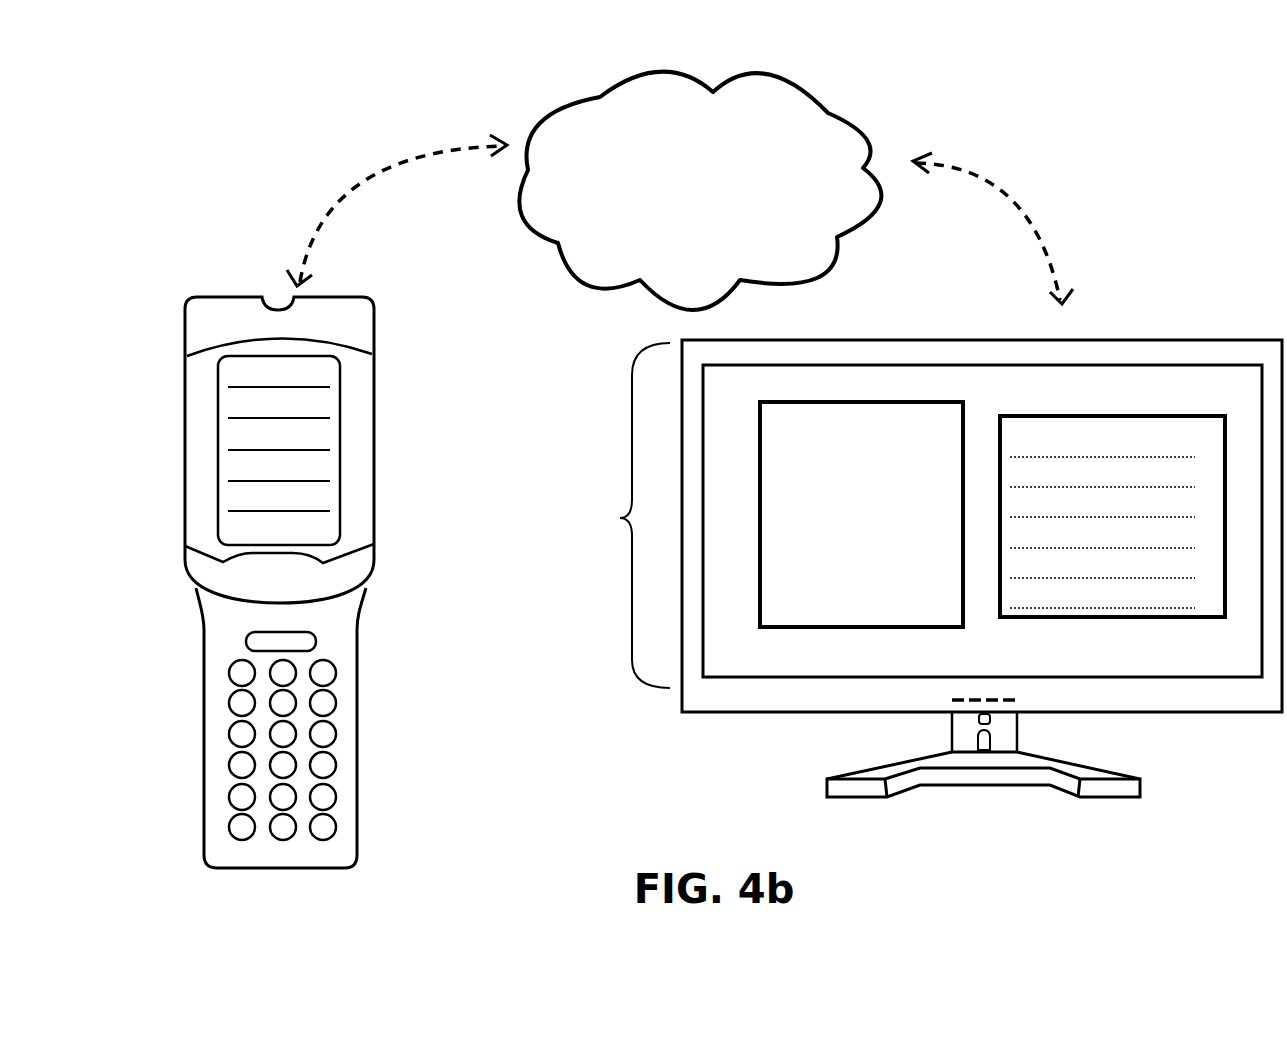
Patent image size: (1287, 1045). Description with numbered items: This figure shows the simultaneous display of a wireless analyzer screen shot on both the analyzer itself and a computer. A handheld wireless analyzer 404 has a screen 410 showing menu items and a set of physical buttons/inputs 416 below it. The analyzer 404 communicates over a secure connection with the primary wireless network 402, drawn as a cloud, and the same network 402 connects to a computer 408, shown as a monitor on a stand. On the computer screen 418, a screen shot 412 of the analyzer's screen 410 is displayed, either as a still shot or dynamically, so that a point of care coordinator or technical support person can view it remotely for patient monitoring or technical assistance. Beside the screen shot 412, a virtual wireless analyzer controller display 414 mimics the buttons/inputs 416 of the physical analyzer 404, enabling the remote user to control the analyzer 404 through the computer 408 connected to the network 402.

The primary wireless network 402 is at (700, 191).
The wireless analyzer 404 is at (328, 582).
The computer 408 is at (917, 509).
The screen 410 is at (334, 437).
The screen shot 412 is at (1120, 405).
The virtual wireless analyzer controller display 414 is at (858, 398).
The buttons/inputs 416 is at (334, 687).
The computer screen 418 is at (620, 518).